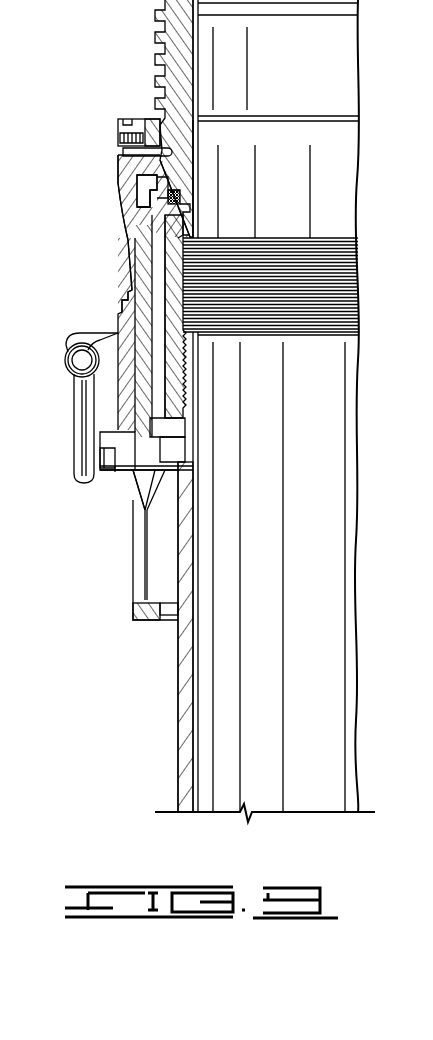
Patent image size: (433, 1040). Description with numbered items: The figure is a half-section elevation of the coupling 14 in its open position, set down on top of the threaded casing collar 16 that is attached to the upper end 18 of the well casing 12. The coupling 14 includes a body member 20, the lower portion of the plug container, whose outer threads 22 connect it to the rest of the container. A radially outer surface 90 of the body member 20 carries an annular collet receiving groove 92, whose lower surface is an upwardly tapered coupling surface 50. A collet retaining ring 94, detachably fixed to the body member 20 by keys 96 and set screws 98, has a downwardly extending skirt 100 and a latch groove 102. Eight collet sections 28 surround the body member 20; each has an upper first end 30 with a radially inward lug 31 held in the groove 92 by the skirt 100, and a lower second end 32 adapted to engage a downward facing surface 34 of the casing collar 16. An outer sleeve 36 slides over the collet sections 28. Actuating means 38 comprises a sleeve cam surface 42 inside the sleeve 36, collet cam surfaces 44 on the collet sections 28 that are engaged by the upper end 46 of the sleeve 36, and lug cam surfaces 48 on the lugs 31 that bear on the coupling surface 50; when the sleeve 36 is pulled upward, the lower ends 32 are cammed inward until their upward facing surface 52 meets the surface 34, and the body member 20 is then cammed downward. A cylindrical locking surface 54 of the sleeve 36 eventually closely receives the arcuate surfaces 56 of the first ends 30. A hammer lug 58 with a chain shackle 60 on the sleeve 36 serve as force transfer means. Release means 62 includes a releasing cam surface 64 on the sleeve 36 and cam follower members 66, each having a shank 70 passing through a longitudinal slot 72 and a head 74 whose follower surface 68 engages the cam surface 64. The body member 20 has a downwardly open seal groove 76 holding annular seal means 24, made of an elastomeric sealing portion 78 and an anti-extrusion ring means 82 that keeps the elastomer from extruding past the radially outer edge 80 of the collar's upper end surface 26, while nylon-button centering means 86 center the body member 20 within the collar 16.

The well casing 12 is at (185, 690).
The coupling 14 is at (122, 548).
The casing collar 16 is at (185, 400).
The upper end 18 is at (205, 333).
The body member 20 is at (146, 118).
The outer threads 22 is at (158, 20).
The annular seal means 24 is at (233, 196).
The upper end surface 26 is at (185, 206).
The collet sections 28 is at (119, 296).
The upper first end 30 is at (121, 244).
The lug 31 is at (137, 168).
The lower second end 32 is at (140, 500).
The downward facing surface 34 is at (180, 442).
The outer sleeve 36 is at (122, 597).
The actuating means 38 is at (104, 191).
The first cam surface 42 is at (150, 490).
The second cam surfaces 44 is at (135, 258).
The upper end 46 is at (128, 292).
The third cam surfaces 48 is at (145, 196).
The coupling surface 50 is at (190, 160).
The upward facing surface 52 is at (185, 421).
The locking surface 54 is at (65, 358).
The arcuate surfaces 56 is at (118, 163).
The hammer lug 58 is at (85, 328).
The chain shackle 60 is at (80, 410).
The release means 62 is at (110, 482).
The fourth cam surface 64 is at (130, 492).
The cam follower members 66 is at (96, 472).
The follower surface 68 is at (110, 440).
The shank 70 is at (120, 474).
The longitudinal slots 72 is at (140, 570).
The head 74 is at (100, 455).
The seal groove 76 is at (180, 194).
The elastomeric sealing portion 78 is at (182, 198).
The radially outer edge 80 is at (170, 176).
The anti-extrusion ring means 82 is at (130, 228).
The centering means 86 is at (185, 216).
The radially outer surface 90 is at (150, 200).
The collet receiving groove 92 is at (200, 150).
The collet retaining ring 94 is at (109, 113).
The keys 96 is at (150, 120).
The set screws 98 is at (120, 138).
The skirt 100 is at (125, 152).
The latch groove 102 is at (128, 122).